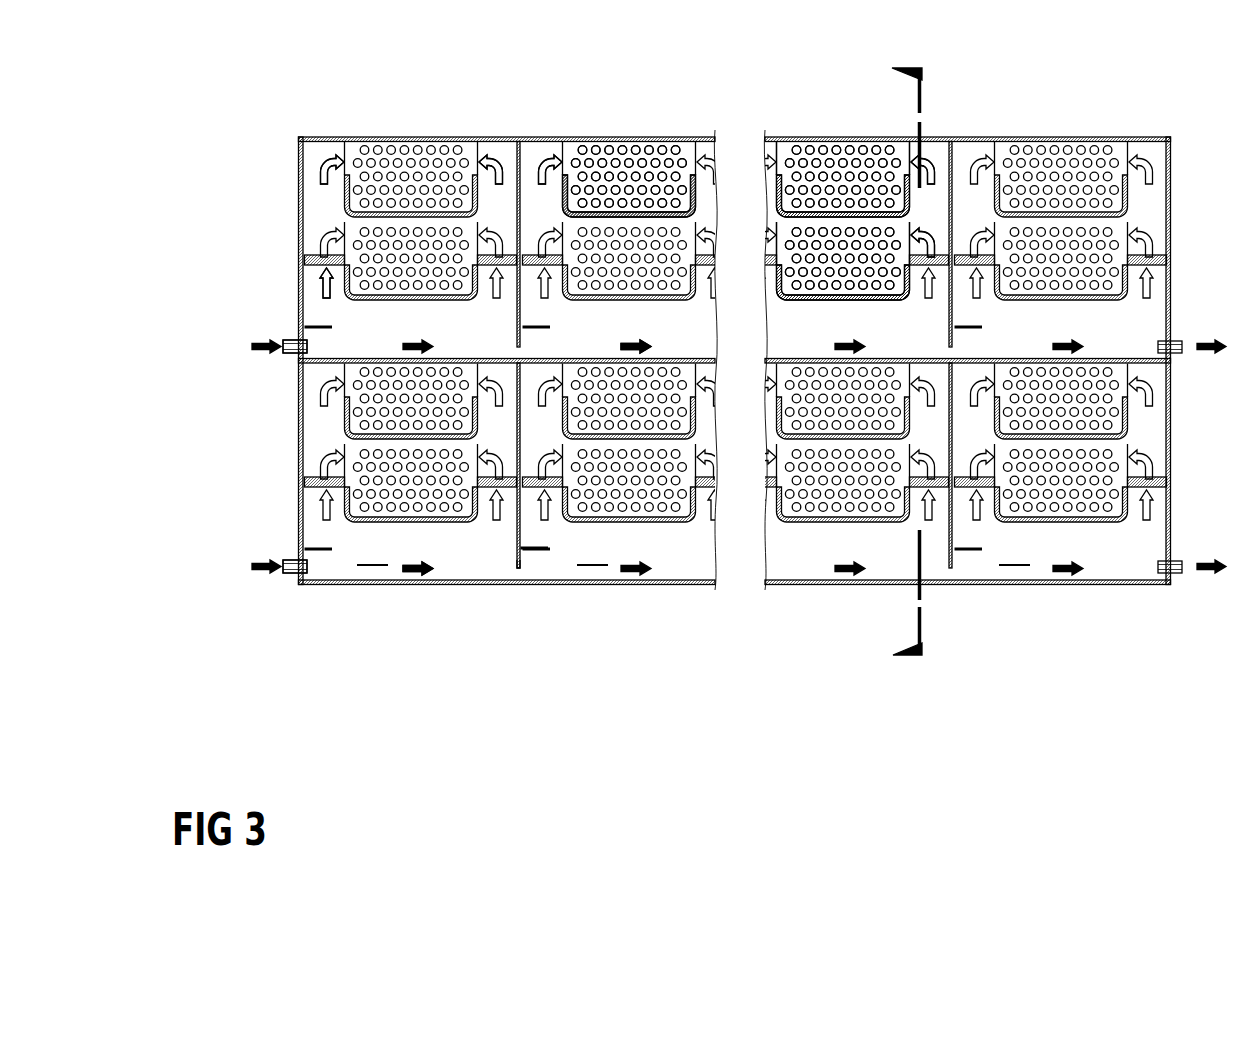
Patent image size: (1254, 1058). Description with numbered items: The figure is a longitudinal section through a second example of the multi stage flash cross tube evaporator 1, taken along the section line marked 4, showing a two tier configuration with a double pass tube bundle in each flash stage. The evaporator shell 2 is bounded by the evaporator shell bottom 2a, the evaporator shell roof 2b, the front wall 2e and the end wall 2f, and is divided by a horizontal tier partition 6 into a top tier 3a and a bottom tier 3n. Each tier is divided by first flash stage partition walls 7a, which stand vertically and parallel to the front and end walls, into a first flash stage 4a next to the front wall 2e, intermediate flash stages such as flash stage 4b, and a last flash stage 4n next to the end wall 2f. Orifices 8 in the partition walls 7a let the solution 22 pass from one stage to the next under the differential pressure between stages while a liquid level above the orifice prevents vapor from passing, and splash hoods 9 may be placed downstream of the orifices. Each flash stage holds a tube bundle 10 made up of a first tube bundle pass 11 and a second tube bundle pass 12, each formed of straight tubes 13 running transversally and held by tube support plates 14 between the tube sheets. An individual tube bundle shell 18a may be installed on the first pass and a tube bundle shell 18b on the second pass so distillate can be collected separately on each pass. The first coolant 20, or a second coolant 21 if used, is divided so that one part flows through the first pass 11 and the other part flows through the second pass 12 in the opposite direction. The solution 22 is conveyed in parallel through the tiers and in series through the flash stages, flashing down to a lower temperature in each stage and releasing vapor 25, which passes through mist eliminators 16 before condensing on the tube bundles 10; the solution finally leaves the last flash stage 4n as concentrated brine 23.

The evaporator 1 is at (263, 150).
The evaporator shell 2 is at (1143, 138).
The evaporator shell bottom 2a is at (1097, 587).
The evaporator shell roof 2b is at (985, 138).
The front wall 2e is at (300, 447).
The end wall 2f is at (1168, 442).
The top tier 3a is at (1170, 182).
The bottom tier 3n is at (1168, 470).
The section line 4 is at (907, 371).
The first flash stage 4a is at (383, 348).
The intermediate flash stage 4b is at (607, 348).
The last flash stage 4n is at (1035, 348).
The horizontal tier partition 6 is at (327, 363).
The first flash stage partition wall 7a is at (515, 540).
The orifice 8 is at (520, 568).
The splash hood 9 is at (548, 547).
The tube bundle 10 is at (613, 150).
The first tube bundle pass 11 is at (809, 150).
The second tube bundle pass 12 is at (860, 237).
The straight tube 13 is at (668, 150).
The tube support plate 14 is at (907, 223).
The mist eliminator 16 is at (549, 165).
The tube bundle shell 18a is at (321, 160).
The tube bundle shell 18b is at (505, 152).
The first coolant 20 is at (258, 340).
The second coolant 21 is at (253, 434).
The solution 22 is at (652, 350).
The concentrated brine 23 is at (1218, 337).
The vapor 25 is at (318, 288).